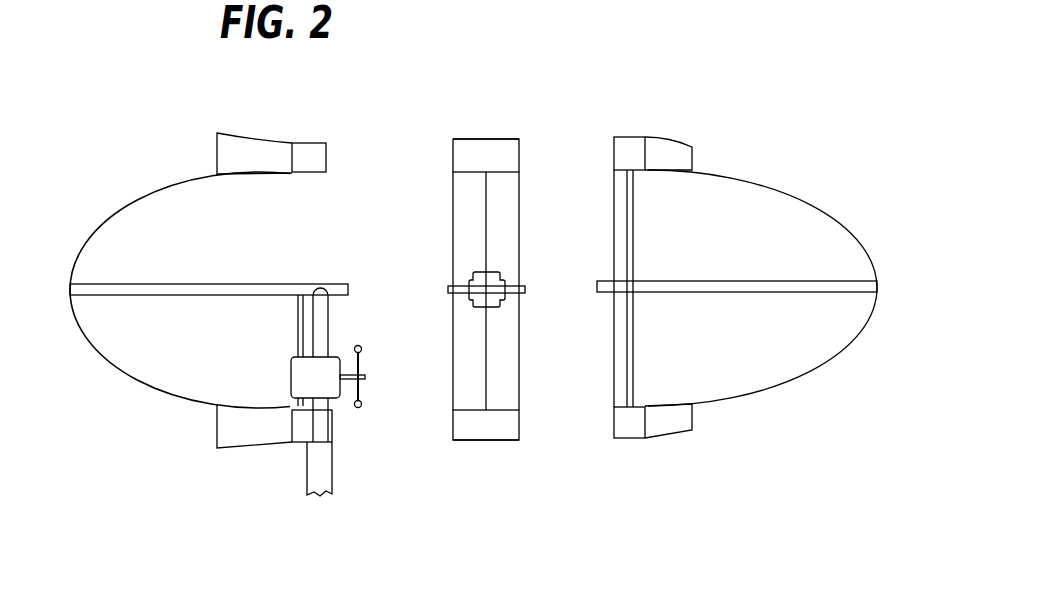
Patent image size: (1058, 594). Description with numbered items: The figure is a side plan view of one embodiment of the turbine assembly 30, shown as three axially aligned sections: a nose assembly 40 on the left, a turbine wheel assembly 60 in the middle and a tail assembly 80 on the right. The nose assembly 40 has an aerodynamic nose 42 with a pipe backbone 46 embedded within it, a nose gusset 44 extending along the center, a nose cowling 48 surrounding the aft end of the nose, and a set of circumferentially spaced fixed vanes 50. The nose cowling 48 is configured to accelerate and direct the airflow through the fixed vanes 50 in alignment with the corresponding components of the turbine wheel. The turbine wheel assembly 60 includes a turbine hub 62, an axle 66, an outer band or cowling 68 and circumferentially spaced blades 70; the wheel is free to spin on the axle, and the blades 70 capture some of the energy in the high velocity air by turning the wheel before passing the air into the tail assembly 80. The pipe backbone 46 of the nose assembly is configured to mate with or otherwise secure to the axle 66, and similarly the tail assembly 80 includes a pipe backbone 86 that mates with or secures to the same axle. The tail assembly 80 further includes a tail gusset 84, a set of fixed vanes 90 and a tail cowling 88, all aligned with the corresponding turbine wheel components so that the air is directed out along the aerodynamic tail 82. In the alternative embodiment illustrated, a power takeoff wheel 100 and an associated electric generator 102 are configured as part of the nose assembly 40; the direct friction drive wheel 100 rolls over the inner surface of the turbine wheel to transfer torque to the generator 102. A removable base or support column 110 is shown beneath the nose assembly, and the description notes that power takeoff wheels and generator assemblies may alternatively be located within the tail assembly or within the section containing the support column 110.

The turbine assembly 30 is at (122, 446).
The nose assembly 40 is at (154, 112).
The aerodynamic nose 42 is at (150, 362).
The nose gusset 44 is at (72, 273).
The pipe backbone 46 is at (150, 292).
The nose cowling 48 is at (307, 143).
The fixed vanes 50 is at (318, 160).
The turbine wheel assembly 60 is at (506, 90).
The turbine hub 62 is at (497, 300).
The axle 66 is at (465, 290).
The outer cowling 68 is at (472, 139).
The fixed blades 70 is at (496, 152).
The tail assembly 80 is at (790, 114).
The aerodynamic tail 82 is at (768, 226).
The tail gusset 84 is at (875, 278).
The pipe backbone 86 is at (810, 283).
The tail cowling 88 is at (630, 137).
The fixed vanes 90 is at (623, 150).
The power takeoff wheel 100 is at (360, 358).
The electric generator 102 is at (338, 398).
The removable base 110 is at (320, 475).